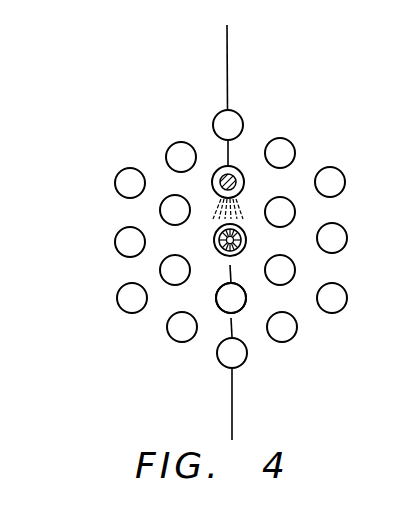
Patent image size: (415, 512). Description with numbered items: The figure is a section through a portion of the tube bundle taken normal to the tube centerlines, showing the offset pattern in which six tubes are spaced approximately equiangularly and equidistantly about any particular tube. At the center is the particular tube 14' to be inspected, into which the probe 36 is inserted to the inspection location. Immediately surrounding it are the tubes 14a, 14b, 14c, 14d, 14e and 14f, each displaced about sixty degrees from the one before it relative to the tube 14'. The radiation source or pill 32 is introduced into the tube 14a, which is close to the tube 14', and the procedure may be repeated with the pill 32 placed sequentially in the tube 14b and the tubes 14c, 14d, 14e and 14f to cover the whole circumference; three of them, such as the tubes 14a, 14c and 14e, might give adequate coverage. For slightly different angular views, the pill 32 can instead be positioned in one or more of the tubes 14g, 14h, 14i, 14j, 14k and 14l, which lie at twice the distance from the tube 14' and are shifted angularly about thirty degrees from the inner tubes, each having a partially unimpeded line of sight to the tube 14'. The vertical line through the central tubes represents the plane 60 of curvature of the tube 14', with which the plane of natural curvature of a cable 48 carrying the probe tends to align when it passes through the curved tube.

The plane of tube curvature 60 is at (227, 40).
The tube 14a is at (222, 170).
The radiation source or pill 32 is at (232, 180).
The tube 14b is at (297, 215).
The tube 14c is at (290, 283).
The tube 14d is at (221, 312).
The tube 14e is at (162, 268).
The tube 14f is at (160, 208).
The tube 14g is at (295, 152).
The tube 14h is at (348, 240).
The tube 14i is at (290, 339).
The tube 14j is at (168, 338).
The tube 14k is at (102, 242).
The tube 14l is at (167, 147).
The particular tube 14' is at (300, 252).
The probe 36 is at (221, 253).
The cable 48 is at (401, 426).